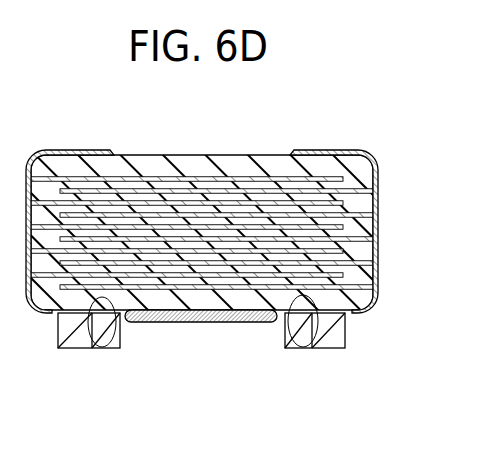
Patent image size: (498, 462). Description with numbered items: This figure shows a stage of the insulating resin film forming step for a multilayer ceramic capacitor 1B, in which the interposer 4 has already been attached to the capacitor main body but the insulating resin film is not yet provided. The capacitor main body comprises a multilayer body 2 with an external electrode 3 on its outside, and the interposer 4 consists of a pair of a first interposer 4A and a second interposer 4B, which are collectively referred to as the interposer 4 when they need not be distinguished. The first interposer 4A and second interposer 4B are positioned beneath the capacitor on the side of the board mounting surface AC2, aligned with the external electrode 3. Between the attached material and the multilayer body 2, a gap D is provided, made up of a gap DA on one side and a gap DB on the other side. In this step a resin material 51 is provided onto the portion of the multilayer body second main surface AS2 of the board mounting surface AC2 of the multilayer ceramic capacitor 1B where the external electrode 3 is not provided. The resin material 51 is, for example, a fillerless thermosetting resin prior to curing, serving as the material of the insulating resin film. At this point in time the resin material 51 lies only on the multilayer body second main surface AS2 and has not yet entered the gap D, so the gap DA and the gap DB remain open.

The multilayer ceramic capacitor 1B is at (249, 194).
The multilayer body 2 is at (152, 163).
The external electrode 3 is at (352, 152).
The interposer 4 is at (202, 379).
The first interposer 4A is at (73, 337).
The second interposer 4B is at (330, 337).
The resin material 51 is at (201, 367).
The multilayer body second main surface AS2 is at (201, 367).
The board mounting surface AC2 is at (168, 323).
The gap D is at (201, 362).
The gap DA is at (97, 348).
The gap DB is at (313, 343).